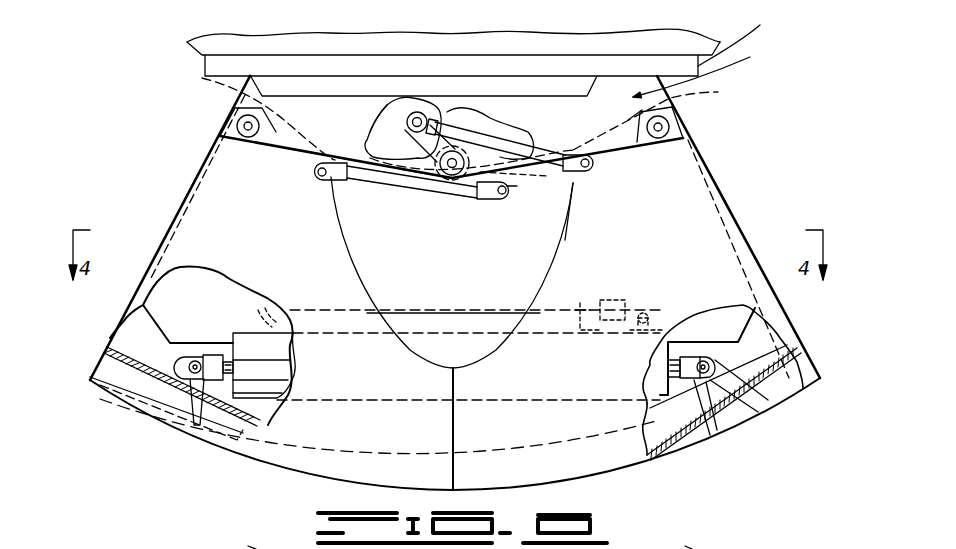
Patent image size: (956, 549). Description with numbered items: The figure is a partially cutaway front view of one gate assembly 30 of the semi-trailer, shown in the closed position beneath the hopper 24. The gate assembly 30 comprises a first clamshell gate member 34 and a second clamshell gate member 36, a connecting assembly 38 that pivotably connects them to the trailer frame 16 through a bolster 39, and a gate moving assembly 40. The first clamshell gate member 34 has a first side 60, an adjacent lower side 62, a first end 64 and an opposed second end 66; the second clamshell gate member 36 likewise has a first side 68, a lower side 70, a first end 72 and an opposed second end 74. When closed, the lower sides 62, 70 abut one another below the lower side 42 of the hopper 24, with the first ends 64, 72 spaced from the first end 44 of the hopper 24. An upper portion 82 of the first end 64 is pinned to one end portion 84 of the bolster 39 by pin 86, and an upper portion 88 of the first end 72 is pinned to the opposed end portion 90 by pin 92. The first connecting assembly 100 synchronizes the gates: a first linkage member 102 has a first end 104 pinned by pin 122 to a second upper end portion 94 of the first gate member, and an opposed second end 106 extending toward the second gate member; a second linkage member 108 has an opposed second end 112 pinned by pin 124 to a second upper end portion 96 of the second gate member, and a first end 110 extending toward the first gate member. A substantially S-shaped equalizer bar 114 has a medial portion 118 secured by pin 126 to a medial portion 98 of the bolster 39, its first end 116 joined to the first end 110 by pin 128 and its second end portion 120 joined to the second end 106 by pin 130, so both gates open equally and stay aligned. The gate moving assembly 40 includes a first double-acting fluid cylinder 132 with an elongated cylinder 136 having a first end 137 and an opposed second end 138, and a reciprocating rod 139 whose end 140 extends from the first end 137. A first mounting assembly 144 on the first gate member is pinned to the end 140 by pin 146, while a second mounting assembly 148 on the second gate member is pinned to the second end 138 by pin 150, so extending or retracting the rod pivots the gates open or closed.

The trailer frame 16 is at (741, 36).
The hopper 24 is at (188, 292).
The gate assembly 30 is at (717, 160).
The first clamshell gate member 34 is at (223, 190).
The second clamshell gate member 36 is at (687, 200).
The connecting assembly 38 is at (380, 123).
The bolster 39 is at (703, 69).
The gate moving assembly 40 is at (440, 350).
The lower side 42 is at (205, 350).
The first end 44 is at (446, 274).
The first side 60 is at (200, 178).
The lower side 62 is at (260, 467).
The first end 64 is at (300, 221).
The opposed second end 66 is at (255, 548).
The first side 68 is at (727, 213).
The lower side 70 is at (622, 472).
The first end 72 is at (634, 242).
The opposed second end 74 is at (690, 548).
The upper portion 82 is at (203, 79).
The end portion 84 is at (280, 86).
The pin 86 is at (245, 125).
The upper portion 88 is at (657, 113).
The opposed end portion 90 is at (627, 83).
The pin 92 is at (673, 117).
The second upper end portion 94 is at (330, 191).
The second upper end portion 96 is at (590, 209).
The medial portion 98 is at (430, 172).
The first connecting assembly 100 is at (463, 124).
The first linkage member 102 is at (393, 186).
The first end 104 is at (318, 180).
The opposed second end 106 is at (487, 199).
The second linkage member 108 is at (610, 112).
The first end 110 is at (387, 110).
The opposed second end 112 is at (590, 175).
The equalizer bar 114 is at (368, 140).
The first end 116 is at (433, 118).
The medial portion 118 is at (560, 148).
The second end portion 120 is at (528, 178).
The pin 122 is at (310, 167).
The pin 124 is at (596, 163).
The pin 126 is at (451, 180).
The pin 128 is at (417, 116).
The pin 130 is at (509, 191).
The first double-acting fluid cylinder 132 is at (473, 348).
The elongated cylinder 136 is at (557, 374).
The first end 137 is at (247, 330).
The opposed second end 138 is at (643, 420).
The reciprocating rod 139 is at (193, 378).
The end 140 is at (170, 355).
The first mounting assembly 144 is at (188, 366).
The pin 146 is at (186, 363).
The second mounting assembly 148 is at (772, 402).
The pin 150 is at (787, 333).